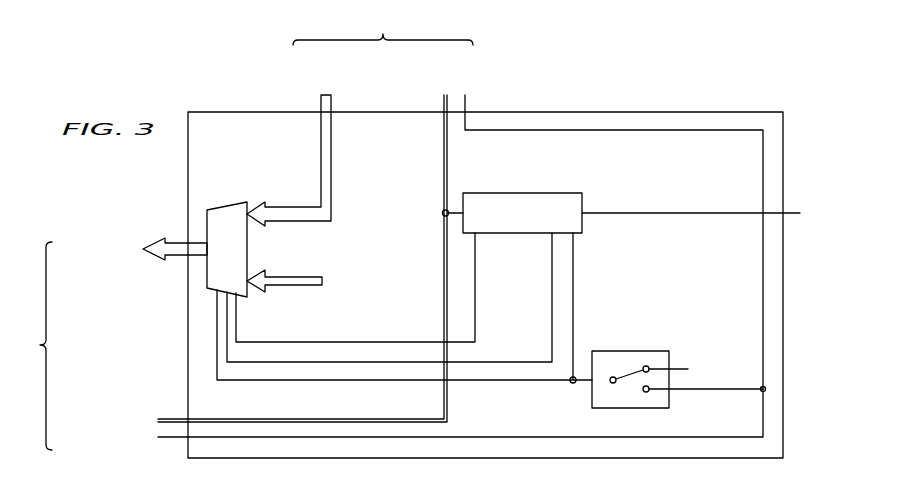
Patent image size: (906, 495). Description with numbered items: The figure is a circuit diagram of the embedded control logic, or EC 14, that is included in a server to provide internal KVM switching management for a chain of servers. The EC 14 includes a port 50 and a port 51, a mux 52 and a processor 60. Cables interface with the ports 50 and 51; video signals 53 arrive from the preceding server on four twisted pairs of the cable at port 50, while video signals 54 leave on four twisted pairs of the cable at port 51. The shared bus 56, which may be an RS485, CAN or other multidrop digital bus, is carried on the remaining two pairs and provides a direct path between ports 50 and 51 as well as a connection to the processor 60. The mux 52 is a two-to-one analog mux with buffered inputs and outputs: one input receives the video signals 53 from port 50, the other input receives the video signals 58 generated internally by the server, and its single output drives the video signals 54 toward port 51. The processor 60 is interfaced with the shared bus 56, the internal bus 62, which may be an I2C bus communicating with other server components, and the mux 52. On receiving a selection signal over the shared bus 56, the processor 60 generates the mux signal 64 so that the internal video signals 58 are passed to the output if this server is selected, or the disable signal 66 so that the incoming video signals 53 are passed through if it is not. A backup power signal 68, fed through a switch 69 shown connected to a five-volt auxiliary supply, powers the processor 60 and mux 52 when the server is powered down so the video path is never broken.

The embedded controller (EC) 14 is at (633, 109).
The port 50 is at (382, 50).
The port 51 is at (70, 341).
The mux 52 is at (222, 208).
The video signals 53 is at (335, 176).
The video signals 54 is at (174, 260).
The shared bus 56 is at (449, 176).
The video signals 58 is at (287, 289).
The processor 60 is at (538, 193).
The internal bus 62 is at (680, 208).
The mux signal 64 is at (478, 312).
The disable signal 66 is at (550, 278).
The backup power signal 68 is at (508, 383).
The switch 69 is at (630, 351).